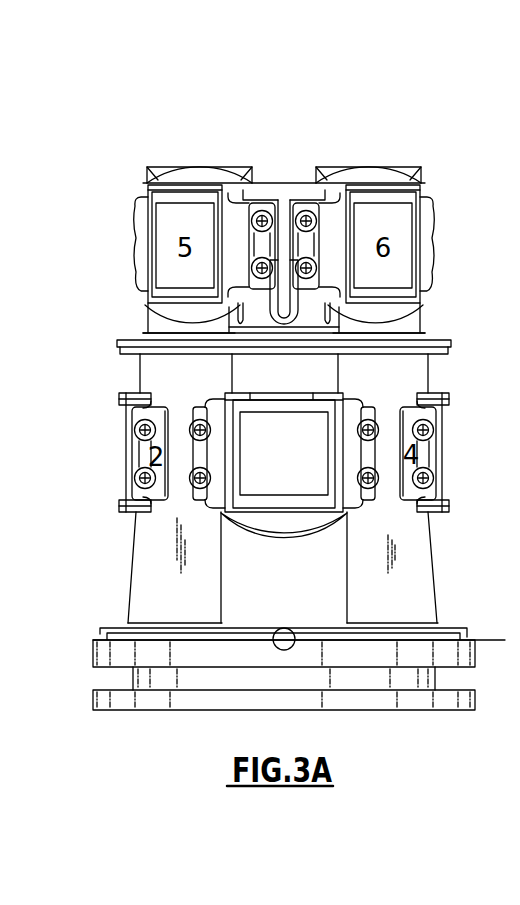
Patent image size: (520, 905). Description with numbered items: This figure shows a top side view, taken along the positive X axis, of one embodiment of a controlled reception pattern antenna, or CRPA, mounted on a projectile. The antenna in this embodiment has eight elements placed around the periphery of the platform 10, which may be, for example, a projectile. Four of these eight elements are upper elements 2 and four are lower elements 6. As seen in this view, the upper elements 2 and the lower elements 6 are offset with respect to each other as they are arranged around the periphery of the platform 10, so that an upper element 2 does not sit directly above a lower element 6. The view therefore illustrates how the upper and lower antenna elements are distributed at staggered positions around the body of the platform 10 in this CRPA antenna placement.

The upper element 2 is at (191, 162).
The lower element 6 is at (115, 461).
The platform 10 is at (414, 597).